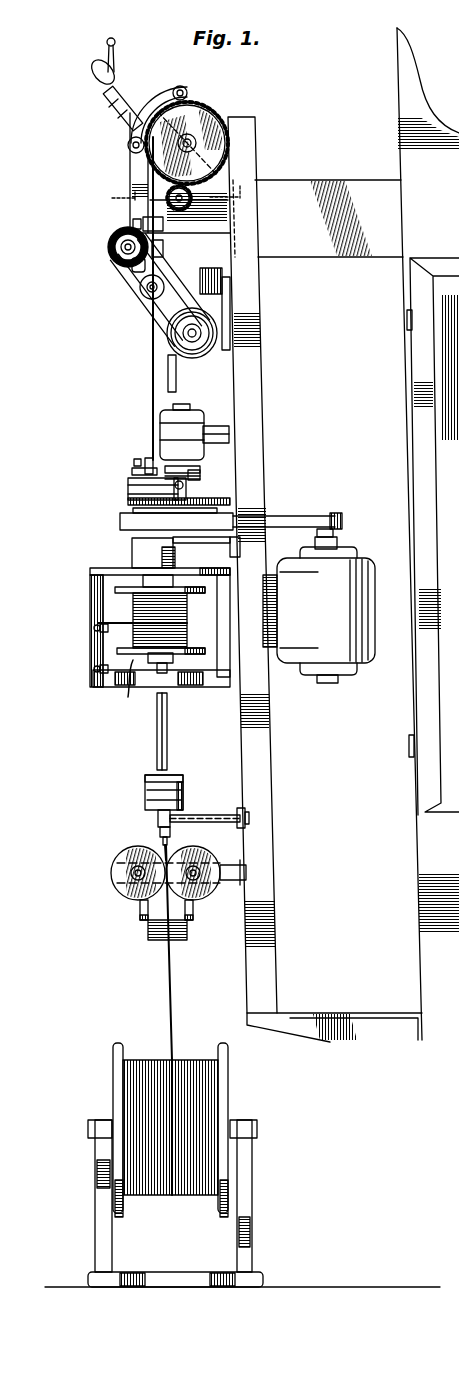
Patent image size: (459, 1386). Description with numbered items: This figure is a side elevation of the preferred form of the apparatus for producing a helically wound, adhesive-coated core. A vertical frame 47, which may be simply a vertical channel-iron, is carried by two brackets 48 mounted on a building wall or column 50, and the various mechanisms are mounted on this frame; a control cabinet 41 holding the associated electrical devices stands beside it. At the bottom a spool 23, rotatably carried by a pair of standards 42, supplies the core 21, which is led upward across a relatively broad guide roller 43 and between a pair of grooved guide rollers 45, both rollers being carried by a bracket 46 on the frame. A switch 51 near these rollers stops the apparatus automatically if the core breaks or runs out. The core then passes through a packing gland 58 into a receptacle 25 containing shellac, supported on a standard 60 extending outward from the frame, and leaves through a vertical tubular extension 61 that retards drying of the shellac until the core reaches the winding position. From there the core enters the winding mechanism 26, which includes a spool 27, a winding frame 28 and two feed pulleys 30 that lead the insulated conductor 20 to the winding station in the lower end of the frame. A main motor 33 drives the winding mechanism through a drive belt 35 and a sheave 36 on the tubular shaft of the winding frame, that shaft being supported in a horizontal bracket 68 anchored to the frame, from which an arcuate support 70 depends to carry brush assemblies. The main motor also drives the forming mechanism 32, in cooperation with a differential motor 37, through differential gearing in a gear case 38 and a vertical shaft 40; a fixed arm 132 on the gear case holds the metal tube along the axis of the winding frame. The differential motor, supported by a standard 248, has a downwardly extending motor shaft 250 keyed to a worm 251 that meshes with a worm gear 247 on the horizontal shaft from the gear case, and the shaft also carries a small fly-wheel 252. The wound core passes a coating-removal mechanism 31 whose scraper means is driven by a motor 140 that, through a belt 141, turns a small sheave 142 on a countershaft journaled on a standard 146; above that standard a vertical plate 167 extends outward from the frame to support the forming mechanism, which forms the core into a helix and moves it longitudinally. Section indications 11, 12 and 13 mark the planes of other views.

The section line 11-11 / handle 11 is at (88, 62).
The section line 12- 12 is at (123, 178).
The section line 13- 13 is at (118, 228).
The insulated conductor 20 is at (92, 650).
The core 21 is at (163, 977).
The spool 23 is at (113, 1050).
The receptacle 25 is at (183, 790).
The winding mechanism 26 is at (94, 705).
The spool 27 is at (132, 694).
The winding frame 28 is at (92, 572).
The feed pulleys 30 is at (94, 629).
The coating-removal mechanism 31 is at (104, 260).
The forming mechanism 32 is at (118, 118).
The main motor 33 is at (352, 642).
The drive belt 35 is at (343, 521).
The sheave 36 is at (125, 514).
The differential motor 37 is at (207, 410).
The gear case 38 is at (133, 482).
The vertical shaft 40 is at (168, 382).
The control cabinet 41 is at (453, 788).
The standards 42 is at (250, 1185).
The guide roller 43 is at (150, 930).
The grooved guide rollers 45 is at (212, 858).
The bracket 46 is at (230, 882).
The vertical frame 47 is at (272, 950).
The brackets 48 is at (316, 180).
The building wall or column 50 is at (420, 881).
The switch 51 is at (150, 846).
The packing gland 58 is at (158, 832).
The standard 60 is at (218, 815).
The vertical tubular extension 61 is at (168, 721).
The horizontal bracket 68 is at (230, 503).
The arcuate support 70 is at (140, 555).
The fixed arm 132 is at (148, 455).
The motor 140 is at (173, 352).
The belt 141 is at (175, 340).
The small sheave 142 is at (140, 286).
The standard 146 is at (213, 285).
The vertical plate 167 is at (220, 220).
The worm gear 247 is at (180, 485).
The standard 248 is at (220, 432).
The motor shaft 250 is at (200, 478).
The worm 251 is at (195, 490).
The fly-wheel 252 is at (200, 468).